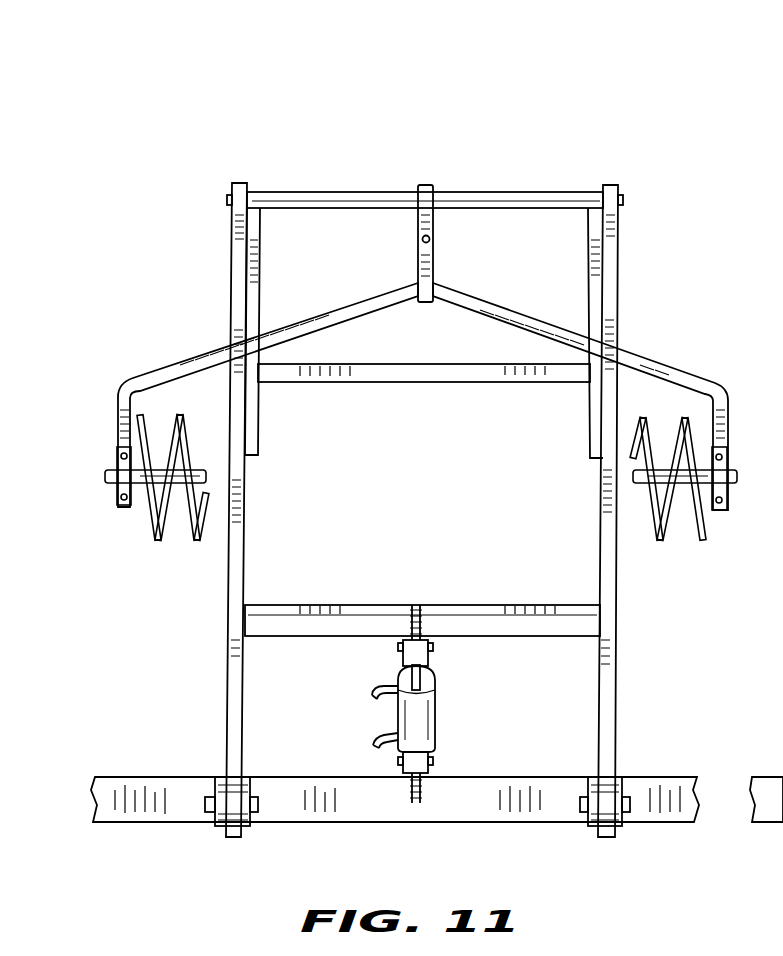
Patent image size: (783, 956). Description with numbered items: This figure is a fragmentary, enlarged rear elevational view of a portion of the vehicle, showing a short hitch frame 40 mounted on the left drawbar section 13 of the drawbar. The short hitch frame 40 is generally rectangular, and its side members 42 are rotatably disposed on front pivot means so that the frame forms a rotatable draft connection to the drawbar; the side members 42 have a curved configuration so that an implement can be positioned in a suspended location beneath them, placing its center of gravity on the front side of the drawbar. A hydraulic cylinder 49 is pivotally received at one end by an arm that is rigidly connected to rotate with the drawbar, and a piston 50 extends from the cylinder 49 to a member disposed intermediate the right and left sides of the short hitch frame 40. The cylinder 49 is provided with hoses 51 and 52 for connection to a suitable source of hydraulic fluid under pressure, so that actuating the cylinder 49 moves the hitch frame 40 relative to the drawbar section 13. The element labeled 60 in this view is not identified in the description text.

The left drawbar section 13 is at (662, 822).
The short hitch frame 40 is at (552, 192).
The left side member 42 is at (232, 245).
The hydraulic cylinder 49 is at (428, 710).
The piston 50 is at (437, 675).
The hose 51 is at (378, 742).
The hose 52 is at (372, 692).
The spring tine assembly 60 is at (703, 526).